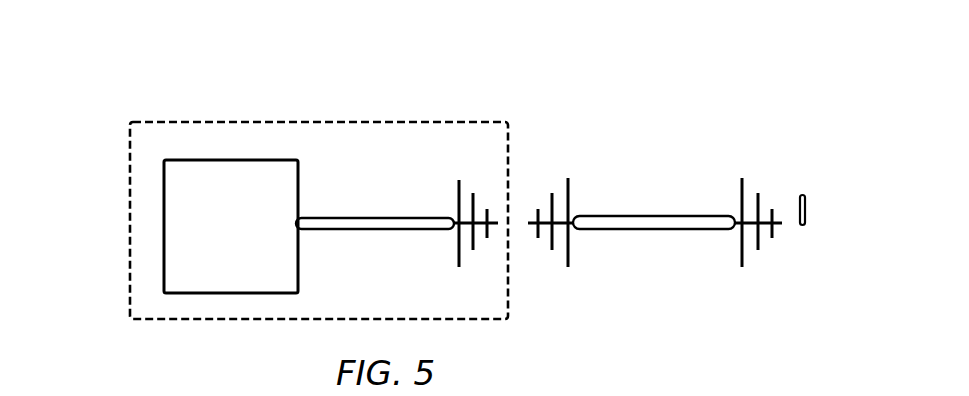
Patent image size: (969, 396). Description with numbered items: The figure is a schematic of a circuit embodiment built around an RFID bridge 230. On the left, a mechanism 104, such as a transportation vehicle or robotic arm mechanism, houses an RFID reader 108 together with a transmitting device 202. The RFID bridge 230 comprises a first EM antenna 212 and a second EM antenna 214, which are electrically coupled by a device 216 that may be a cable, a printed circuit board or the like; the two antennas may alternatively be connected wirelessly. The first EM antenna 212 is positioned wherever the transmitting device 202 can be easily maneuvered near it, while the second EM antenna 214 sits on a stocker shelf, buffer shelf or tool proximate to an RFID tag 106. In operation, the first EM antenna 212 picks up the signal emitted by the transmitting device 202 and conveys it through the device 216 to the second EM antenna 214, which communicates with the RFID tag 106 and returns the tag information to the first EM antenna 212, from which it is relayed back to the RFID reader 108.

The robotic arm mechanism 104 is at (130, 172).
The RFID reader 108 is at (246, 160).
The transmitting device 202 is at (472, 270).
The first EM antenna 212 is at (550, 174).
The second EM antenna 214 is at (757, 178).
The device 216 is at (657, 215).
The RFID tag 106 is at (805, 203).
The RFID bridge 230 is at (690, 107).